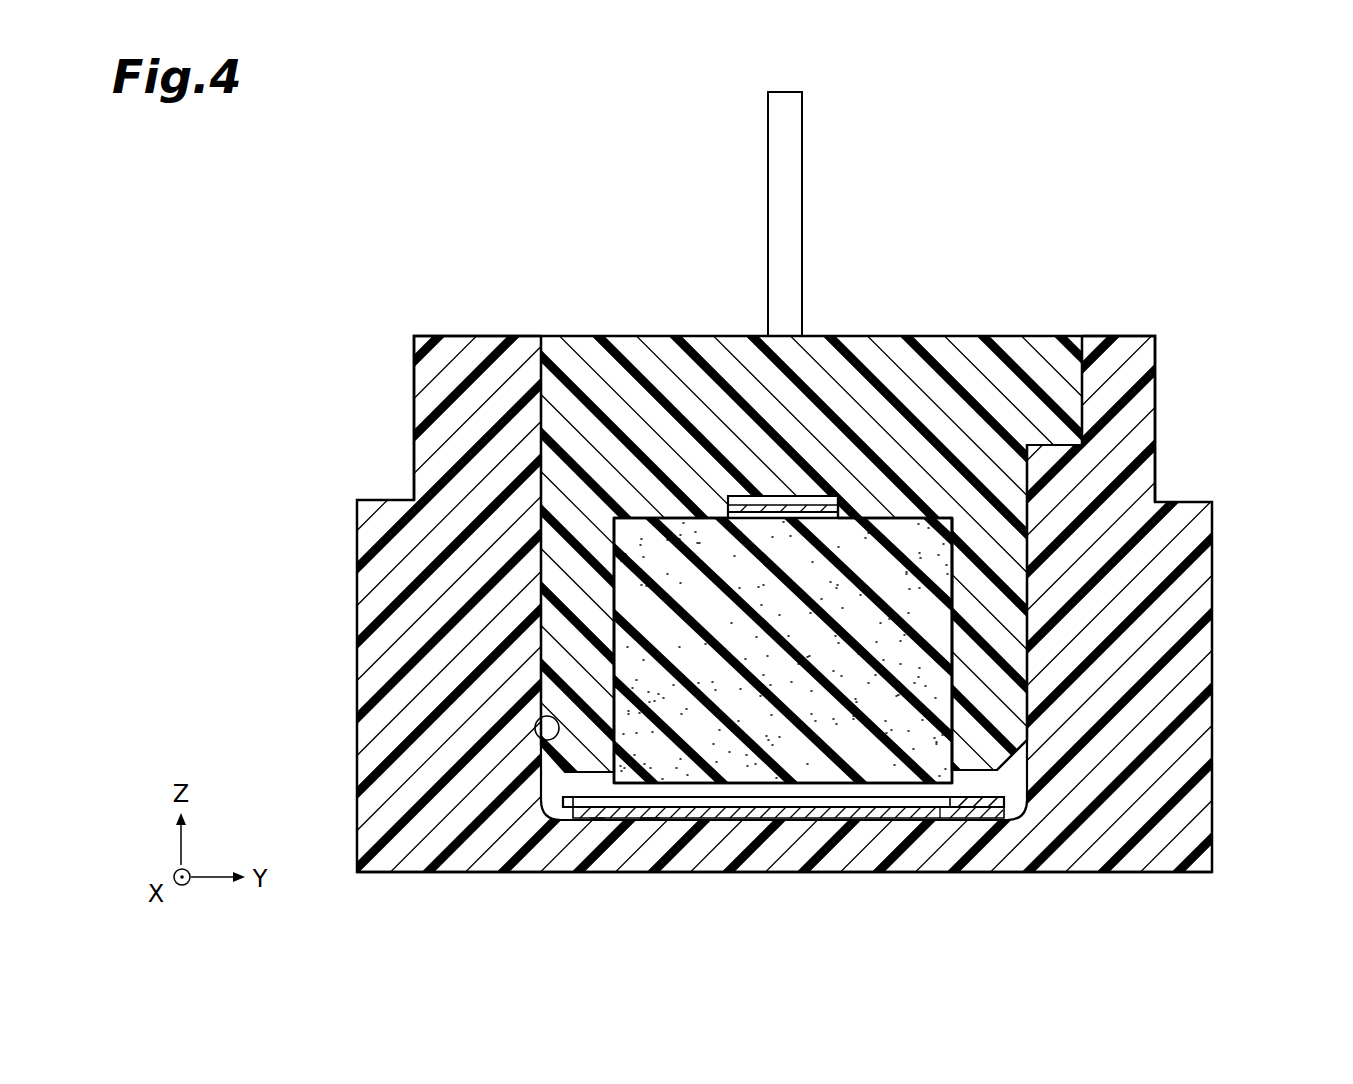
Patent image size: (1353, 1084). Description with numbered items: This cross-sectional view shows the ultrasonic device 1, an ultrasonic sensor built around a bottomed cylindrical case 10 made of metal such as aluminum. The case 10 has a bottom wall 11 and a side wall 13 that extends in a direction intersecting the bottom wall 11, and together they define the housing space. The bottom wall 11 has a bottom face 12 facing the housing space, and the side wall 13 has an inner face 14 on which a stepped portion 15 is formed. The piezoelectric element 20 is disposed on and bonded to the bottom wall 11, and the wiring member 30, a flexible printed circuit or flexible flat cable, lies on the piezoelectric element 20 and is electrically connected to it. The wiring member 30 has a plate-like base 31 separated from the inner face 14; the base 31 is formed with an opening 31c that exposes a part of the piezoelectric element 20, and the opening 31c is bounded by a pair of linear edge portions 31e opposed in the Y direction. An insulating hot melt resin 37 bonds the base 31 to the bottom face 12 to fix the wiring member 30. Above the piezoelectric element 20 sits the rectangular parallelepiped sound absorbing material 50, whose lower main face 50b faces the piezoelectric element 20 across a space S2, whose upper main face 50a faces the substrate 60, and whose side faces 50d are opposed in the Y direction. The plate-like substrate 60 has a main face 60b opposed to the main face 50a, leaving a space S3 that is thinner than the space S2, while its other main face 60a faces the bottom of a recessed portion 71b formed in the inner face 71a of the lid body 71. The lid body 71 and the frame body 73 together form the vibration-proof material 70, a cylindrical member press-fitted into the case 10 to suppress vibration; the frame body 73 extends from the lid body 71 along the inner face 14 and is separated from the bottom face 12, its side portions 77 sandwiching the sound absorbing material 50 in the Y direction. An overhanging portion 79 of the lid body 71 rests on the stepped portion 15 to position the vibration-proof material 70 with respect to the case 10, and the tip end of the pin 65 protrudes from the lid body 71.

The ultrasonic device 1 is at (403, 229).
The case 10 is at (1165, 417).
The bottom wall 11 is at (453, 873).
The bottom face 12 is at (668, 815).
The side wall 13 is at (414, 447).
The inner face 14 is at (536, 728).
The stepped portion 15 is at (1075, 444).
The piezoelectric element 20 is at (882, 812).
The wiring member 30 is at (1020, 805).
The base 31 is at (700, 809).
The opening 31c is at (648, 819).
The linear edge portion 31e is at (571, 809).
The hot melt resin 37 is at (597, 819).
The sound absorbing material 50 is at (930, 650).
The main face 50a is at (677, 516).
The main face 50b is at (820, 786).
The side face 50d is at (556, 580).
The substrate 60 is at (743, 497).
The main face 60a is at (770, 497).
The main face 60b is at (800, 511).
The pin 65 is at (803, 196).
The vibration-proof material 70 is at (920, 326).
The lid body 71 is at (1038, 340).
The inner face 71a is at (942, 524).
The recessed portion 71b is at (906, 567).
The frame body 73 is at (532, 520).
The side portion 77 is at (556, 655).
The overhanging portion 79 is at (1062, 470).
The space S2 is at (762, 790).
The space S3 is at (800, 514).